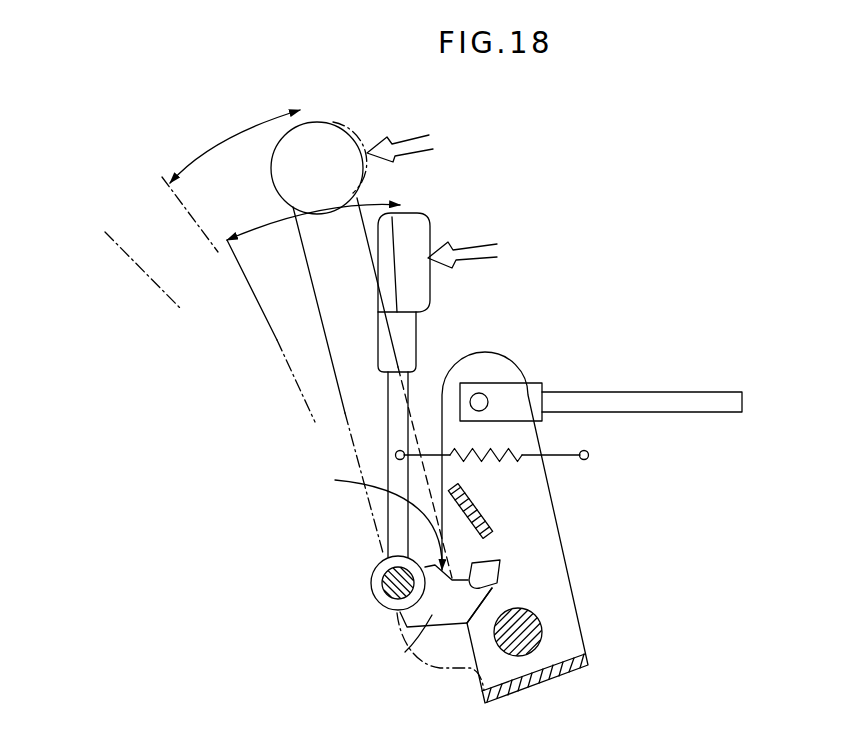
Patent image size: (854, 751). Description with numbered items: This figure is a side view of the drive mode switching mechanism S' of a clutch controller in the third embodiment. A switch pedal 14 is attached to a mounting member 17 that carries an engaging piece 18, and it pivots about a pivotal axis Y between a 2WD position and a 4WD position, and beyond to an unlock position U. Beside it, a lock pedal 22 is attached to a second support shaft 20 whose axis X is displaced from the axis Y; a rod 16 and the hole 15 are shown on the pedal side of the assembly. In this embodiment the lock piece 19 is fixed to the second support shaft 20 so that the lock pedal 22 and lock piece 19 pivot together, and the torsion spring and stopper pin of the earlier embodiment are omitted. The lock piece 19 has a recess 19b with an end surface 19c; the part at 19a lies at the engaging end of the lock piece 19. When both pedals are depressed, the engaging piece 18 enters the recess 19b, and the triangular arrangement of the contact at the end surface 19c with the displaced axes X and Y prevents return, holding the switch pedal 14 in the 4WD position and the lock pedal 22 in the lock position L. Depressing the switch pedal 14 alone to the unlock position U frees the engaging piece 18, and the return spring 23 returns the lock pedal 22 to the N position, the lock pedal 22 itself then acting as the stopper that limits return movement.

The switch pedal 14 is at (330, 137).
The pivot hole 15 is at (540, 624).
The control rod 16 is at (675, 398).
The mounting member 17 is at (478, 365).
The engaging piece 18 is at (476, 502).
The lock piece 19 is at (408, 647).
The engaging pin 19a is at (496, 562).
The recess 19b is at (361, 519).
The end surface 19c is at (492, 588).
The second support shaft 20 is at (390, 578).
The lock pedal 22 is at (412, 225).
The return spring 23 is at (562, 455).
The unlock position U is at (133, 256).
The lock position L is at (306, 313).
The N position N is at (401, 184).
The axis of second support shaft X is at (398, 583).
The pivotal axis of switch pedal Y is at (518, 632).
The drive mode switching mechanism S' is at (597, 203).
The 2WD position 2WD is at (301, 87).
The 4WD position 4WD is at (210, 181).